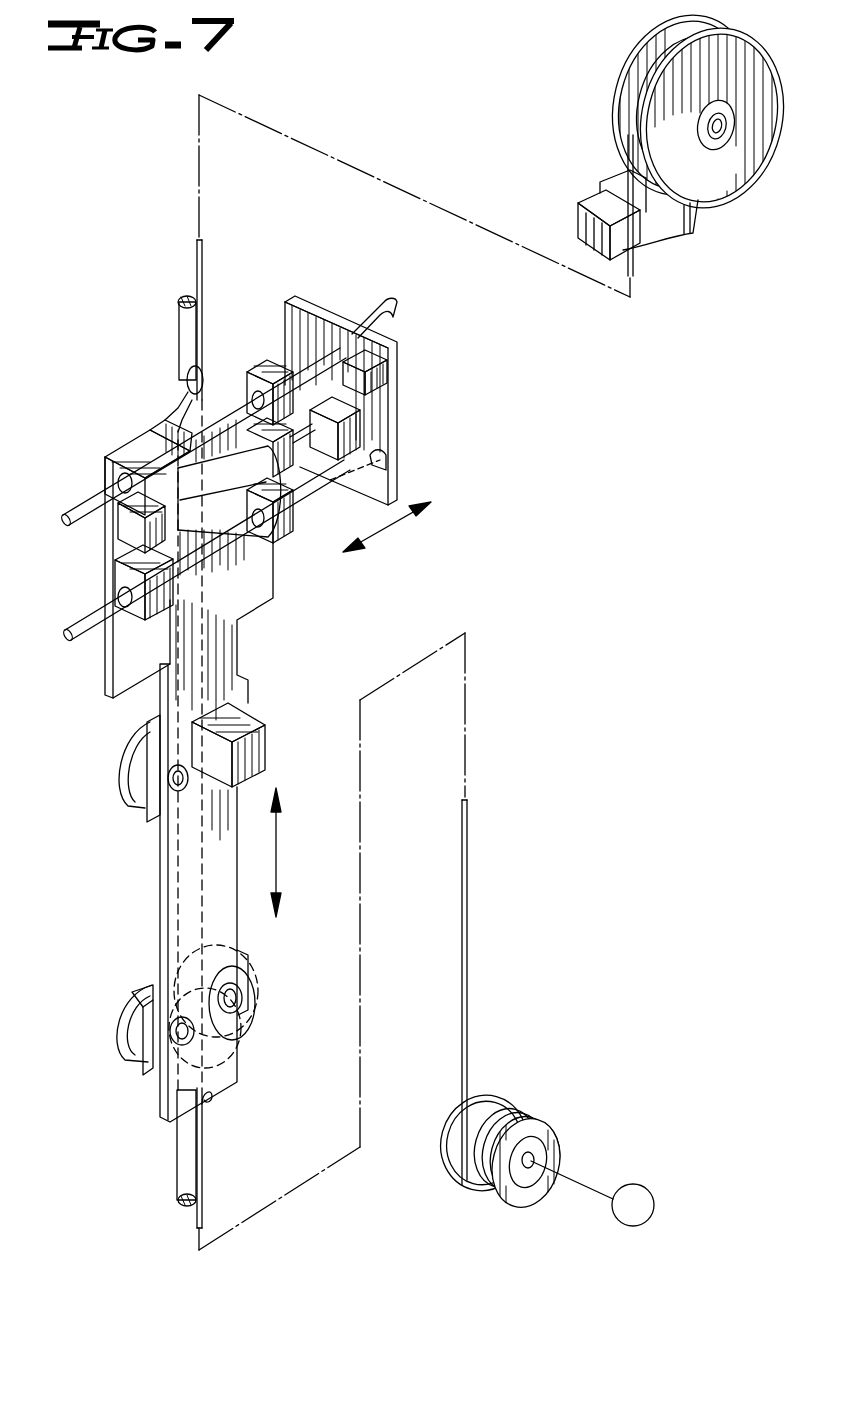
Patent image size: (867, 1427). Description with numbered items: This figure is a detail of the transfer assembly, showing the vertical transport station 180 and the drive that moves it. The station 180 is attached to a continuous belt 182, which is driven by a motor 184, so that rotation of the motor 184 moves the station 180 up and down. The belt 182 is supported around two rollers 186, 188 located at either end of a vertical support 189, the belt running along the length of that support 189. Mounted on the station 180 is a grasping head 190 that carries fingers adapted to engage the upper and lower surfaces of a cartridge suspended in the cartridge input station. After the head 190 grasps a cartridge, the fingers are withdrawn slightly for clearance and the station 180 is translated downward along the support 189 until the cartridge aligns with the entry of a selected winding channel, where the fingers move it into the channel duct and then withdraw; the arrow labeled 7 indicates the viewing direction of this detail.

The document handling assembly (viewing direction arrow) 7 is at (94, 850).
The vertical transport station 180 is at (128, 424).
The continuous belt 182 is at (196, 255).
The motor 184 is at (650, 1196).
The roller 186 is at (550, 1140).
The roller 188 is at (738, 150).
The vertical support 189 is at (179, 325).
The grasping head 190 is at (321, 331).